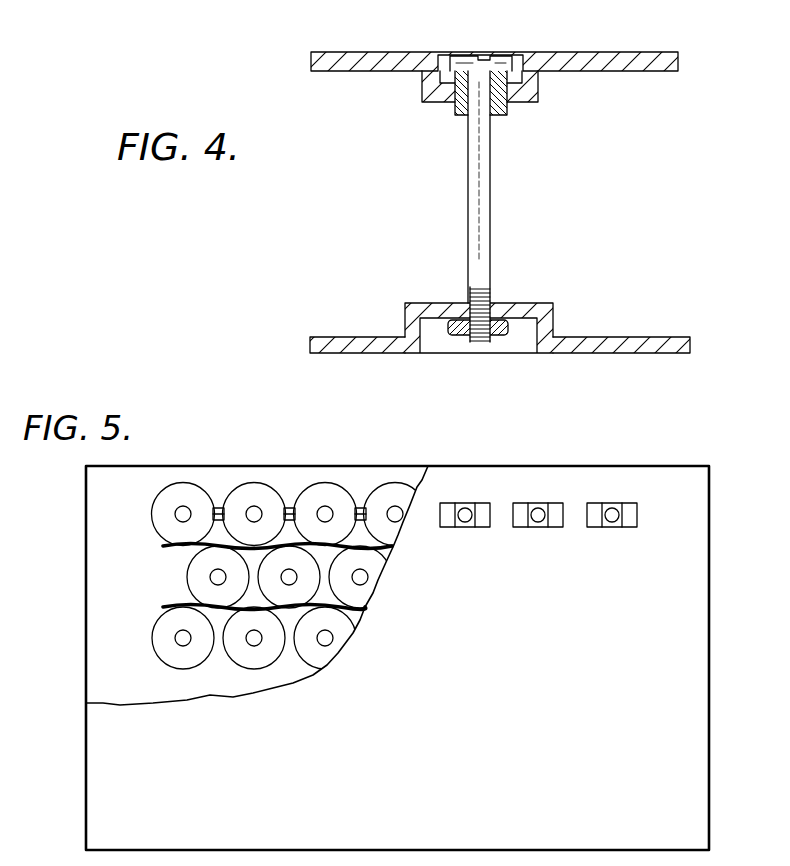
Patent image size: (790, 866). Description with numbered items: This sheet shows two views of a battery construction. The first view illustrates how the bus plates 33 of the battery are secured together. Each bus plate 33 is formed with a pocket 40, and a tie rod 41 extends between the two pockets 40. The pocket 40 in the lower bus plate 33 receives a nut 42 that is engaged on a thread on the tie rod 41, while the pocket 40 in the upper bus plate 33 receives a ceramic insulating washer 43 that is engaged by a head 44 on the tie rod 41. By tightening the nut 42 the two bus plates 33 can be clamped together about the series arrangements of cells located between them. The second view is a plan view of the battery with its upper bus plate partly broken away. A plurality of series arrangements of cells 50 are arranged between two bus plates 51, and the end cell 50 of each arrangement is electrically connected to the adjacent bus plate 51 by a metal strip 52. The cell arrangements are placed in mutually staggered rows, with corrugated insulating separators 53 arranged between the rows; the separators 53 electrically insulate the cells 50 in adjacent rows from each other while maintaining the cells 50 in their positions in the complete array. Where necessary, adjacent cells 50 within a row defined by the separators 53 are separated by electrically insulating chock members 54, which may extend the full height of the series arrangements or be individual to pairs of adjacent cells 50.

In FIG. 4, the bus plate 33 is at (620, 53).
In FIG. 4, the pocket 40 is at (447, 57).
In FIG. 4, the tie rod 41 is at (468, 197).
In FIG. 4, the nut 42 is at (500, 338).
In FIG. 4, the ceramic insulating washer 43 is at (516, 76).
In FIG. 4, the head 44 is at (500, 57).
In FIG. 5, the cell 50 is at (200, 490).
In FIG. 5, the bus plate 51 is at (112, 500).
In FIG. 5, the metal strip 52 is at (483, 508).
In FIG. 5, the corrugated insulating separator 53 is at (358, 506).
In FIG. 5, the electrically insulating chock member 54 is at (218, 505).